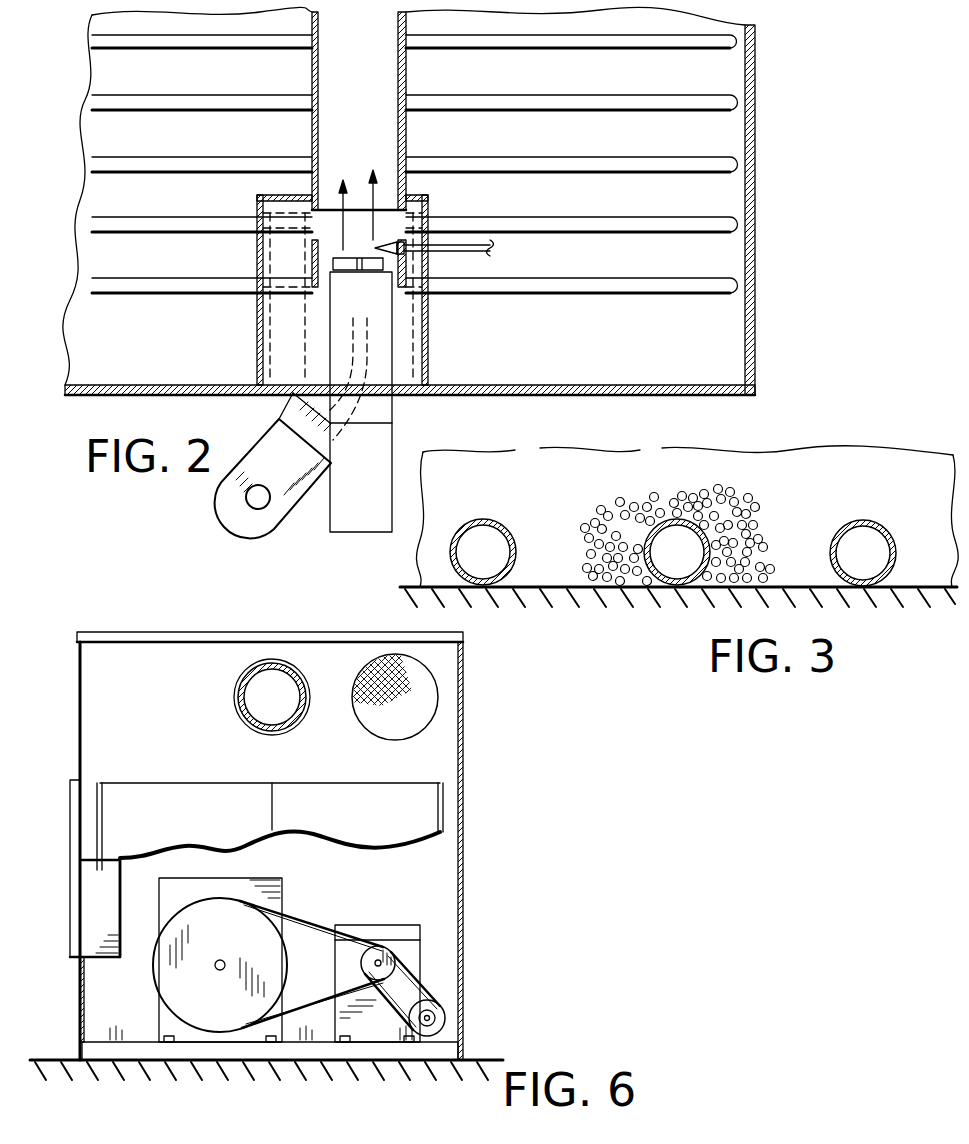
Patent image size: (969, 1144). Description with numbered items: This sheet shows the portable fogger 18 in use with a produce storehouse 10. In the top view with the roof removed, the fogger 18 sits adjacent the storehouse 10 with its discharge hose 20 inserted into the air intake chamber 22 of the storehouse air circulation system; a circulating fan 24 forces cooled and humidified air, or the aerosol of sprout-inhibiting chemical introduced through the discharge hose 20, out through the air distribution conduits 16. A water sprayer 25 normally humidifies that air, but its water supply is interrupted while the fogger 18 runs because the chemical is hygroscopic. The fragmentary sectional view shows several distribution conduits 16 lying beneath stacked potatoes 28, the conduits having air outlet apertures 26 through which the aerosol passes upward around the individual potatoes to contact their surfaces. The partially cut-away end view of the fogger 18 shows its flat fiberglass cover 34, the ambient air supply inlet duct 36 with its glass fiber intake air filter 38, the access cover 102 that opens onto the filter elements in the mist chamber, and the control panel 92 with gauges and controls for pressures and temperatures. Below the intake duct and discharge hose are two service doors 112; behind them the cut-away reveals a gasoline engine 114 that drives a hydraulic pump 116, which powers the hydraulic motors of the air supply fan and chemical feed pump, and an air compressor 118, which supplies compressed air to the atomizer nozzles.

In FIG. 2, the storehouse 10 is at (768, 187).
In FIG. 2, the air distribution conduits 16 is at (100, 163).
In FIG. 3, the air distribution conduits 16 is at (498, 528).
In FIG. 2, the portable fogger 18 is at (225, 503).
In FIG. 6, the portable fogger 18 is at (468, 765).
In FIG. 2, the discharge hose 20 is at (322, 430).
In FIG. 6, the discharge hose 20 is at (258, 660).
In FIG. 2, the air intake chamber 22 is at (345, 309).
In FIG. 2, the circulating fan 24 is at (333, 262).
In FIG. 2, the water sprayer 25 is at (453, 252).
In FIG. 3, the air outlet apertures 26 is at (470, 590).
In FIG. 3, the gravel / aggregate 28 is at (728, 522).
In FIG. 6, the flat cover 34 is at (130, 634).
In FIG. 6, the ambient air supply inlet duct 36 is at (436, 686).
In FIG. 6, the intake air filter 38 is at (415, 705).
In FIG. 6, the control panel 92 is at (100, 905).
In FIG. 2, the access cover 102 is at (256, 505).
In FIG. 6, the service doors 112 is at (110, 812).
In FIG. 6, the gasoline engine 114 is at (410, 950).
In FIG. 6, the hydraulic pump 116 is at (446, 1014).
In FIG. 6, the air compressor 118 is at (279, 885).